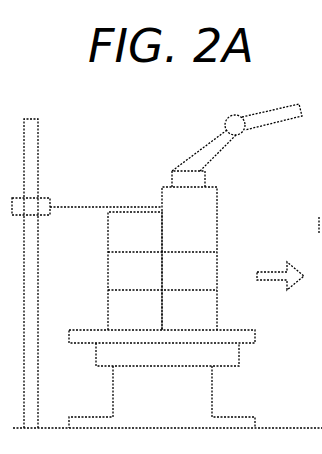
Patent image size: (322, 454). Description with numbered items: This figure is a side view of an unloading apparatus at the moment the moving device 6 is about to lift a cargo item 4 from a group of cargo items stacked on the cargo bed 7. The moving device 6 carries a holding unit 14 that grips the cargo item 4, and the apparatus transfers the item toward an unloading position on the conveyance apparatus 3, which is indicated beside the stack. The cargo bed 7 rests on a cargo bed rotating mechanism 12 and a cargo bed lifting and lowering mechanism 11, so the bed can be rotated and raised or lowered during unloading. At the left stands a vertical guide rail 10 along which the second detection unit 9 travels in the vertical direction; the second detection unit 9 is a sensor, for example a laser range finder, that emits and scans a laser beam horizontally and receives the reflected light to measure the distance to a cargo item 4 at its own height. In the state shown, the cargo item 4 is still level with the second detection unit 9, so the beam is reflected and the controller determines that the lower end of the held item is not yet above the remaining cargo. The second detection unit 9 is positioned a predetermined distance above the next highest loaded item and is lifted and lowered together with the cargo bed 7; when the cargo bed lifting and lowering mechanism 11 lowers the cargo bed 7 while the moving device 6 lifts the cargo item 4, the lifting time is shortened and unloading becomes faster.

The guide rail 10 is at (40, 123).
The second detection unit 9 is at (48, 196).
The cargo item 4 is at (108, 235).
The conveyance apparatus 3 is at (228, 202).
The holding unit 14 is at (206, 178).
The moving device 6 is at (263, 127).
The cargo bed 7 is at (239, 328).
The cargo bed rotating mechanism 12 is at (229, 362).
The cargo bed lifting and lowering mechanism 11 is at (215, 392).